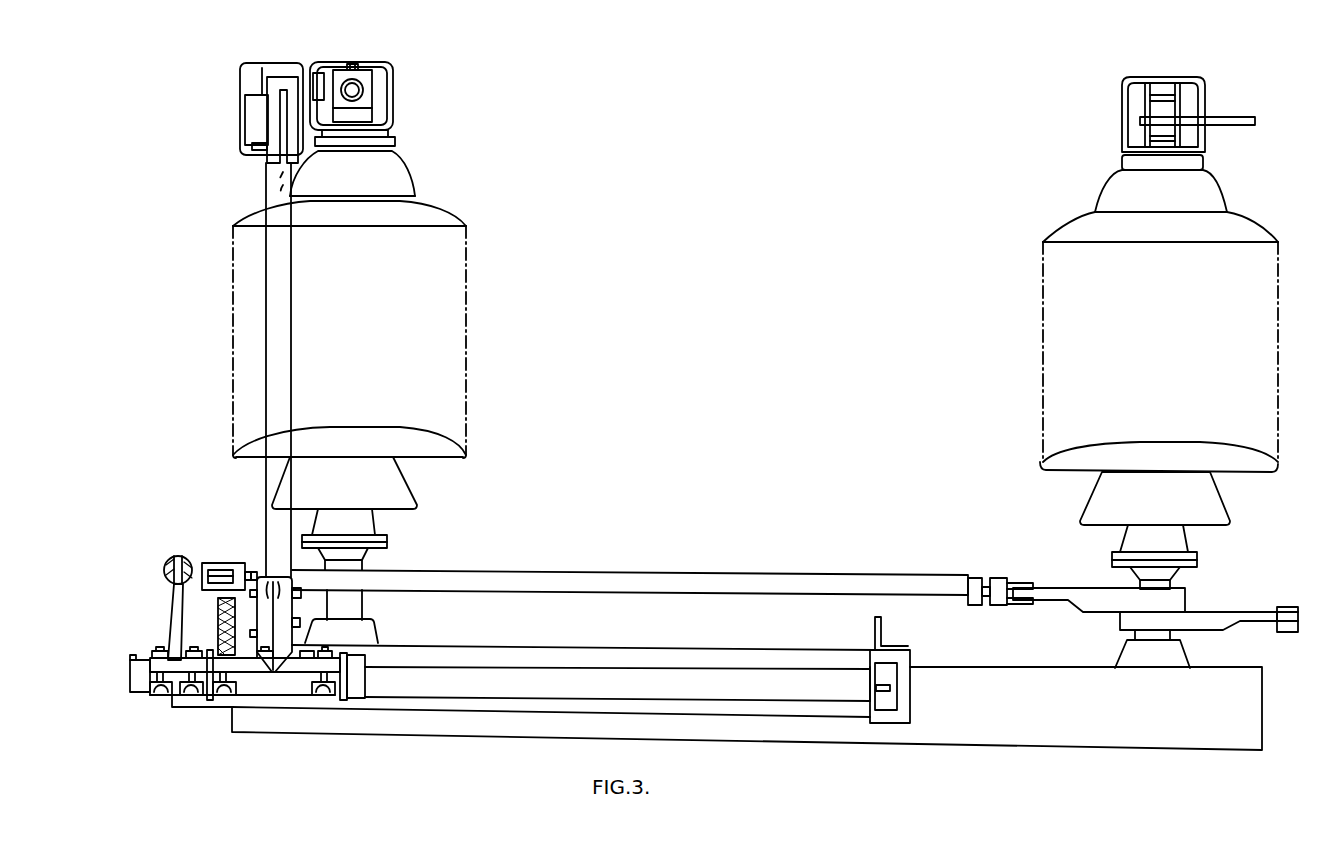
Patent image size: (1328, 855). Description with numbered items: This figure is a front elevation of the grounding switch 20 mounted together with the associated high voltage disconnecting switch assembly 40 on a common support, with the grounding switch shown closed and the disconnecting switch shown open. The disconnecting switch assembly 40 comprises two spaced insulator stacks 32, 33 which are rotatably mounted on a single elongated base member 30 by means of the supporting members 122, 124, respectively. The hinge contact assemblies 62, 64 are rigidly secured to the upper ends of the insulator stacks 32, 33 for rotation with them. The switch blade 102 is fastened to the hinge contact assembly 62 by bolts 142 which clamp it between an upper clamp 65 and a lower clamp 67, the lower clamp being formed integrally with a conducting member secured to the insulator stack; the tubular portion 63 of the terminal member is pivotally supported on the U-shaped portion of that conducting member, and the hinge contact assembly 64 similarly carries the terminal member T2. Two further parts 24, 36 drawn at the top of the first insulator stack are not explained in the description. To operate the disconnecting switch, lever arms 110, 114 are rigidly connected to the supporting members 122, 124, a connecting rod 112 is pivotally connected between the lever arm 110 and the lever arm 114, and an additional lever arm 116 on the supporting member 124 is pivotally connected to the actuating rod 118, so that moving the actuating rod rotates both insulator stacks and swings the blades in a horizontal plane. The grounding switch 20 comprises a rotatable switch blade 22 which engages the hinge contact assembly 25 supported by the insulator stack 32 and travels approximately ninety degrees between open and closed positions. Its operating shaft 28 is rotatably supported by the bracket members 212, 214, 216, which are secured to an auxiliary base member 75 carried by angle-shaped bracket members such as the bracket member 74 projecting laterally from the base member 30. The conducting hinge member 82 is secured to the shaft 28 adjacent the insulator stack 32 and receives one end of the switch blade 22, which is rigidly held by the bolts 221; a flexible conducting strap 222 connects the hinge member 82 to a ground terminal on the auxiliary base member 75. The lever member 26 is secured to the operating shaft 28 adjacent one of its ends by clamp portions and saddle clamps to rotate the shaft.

The grounding switch 20 is at (220, 368).
The switch blade 22 is at (293, 355).
The clamp 24 is at (270, 158).
The hinge contact assembly 25 is at (227, 124).
The lever member 26 is at (177, 622).
The operating shaft 28 is at (528, 664).
The base member 30 is at (1042, 733).
The insulator stack 32 is at (460, 304).
The insulator stack 33 is at (1266, 290).
The mounting block 36 is at (250, 80).
The disconnecting switch assembly 40 is at (1090, 154).
The hinge contact assembly 62 is at (345, 50).
The tubular portion 63 is at (1160, 102).
The hinge contact assembly 64 is at (1186, 68).
The upper clamp 65 is at (370, 75).
The lower clamp 67 is at (373, 113).
The bracket member 74 is at (881, 634).
The auxiliary base member 75 is at (765, 718).
The conducting hinge member 82 is at (282, 610).
The switch blade 102 is at (365, 90).
The lever arm 110 is at (222, 563).
The connecting rod 112 is at (753, 573).
The lever arm 114 is at (1057, 588).
The lever arm 116 is at (1214, 612).
The actuating rod 118 is at (1287, 607).
The supporting member 122 is at (367, 633).
The supporting member 124 is at (1178, 652).
The bolts 142 is at (356, 65).
The bracket member 212 is at (357, 702).
The bracket member 214 is at (889, 711).
The bracket member 216 is at (206, 700).
The bolts 221 is at (306, 592).
The flexible conducting strap 222 is at (218, 620).
The terminal member T2 is at (1239, 117).